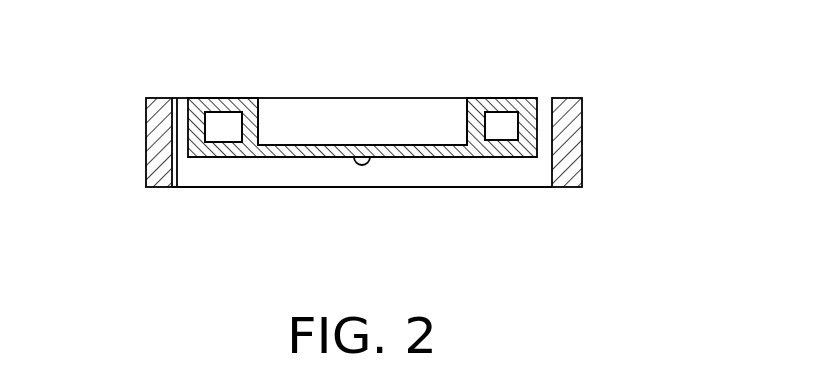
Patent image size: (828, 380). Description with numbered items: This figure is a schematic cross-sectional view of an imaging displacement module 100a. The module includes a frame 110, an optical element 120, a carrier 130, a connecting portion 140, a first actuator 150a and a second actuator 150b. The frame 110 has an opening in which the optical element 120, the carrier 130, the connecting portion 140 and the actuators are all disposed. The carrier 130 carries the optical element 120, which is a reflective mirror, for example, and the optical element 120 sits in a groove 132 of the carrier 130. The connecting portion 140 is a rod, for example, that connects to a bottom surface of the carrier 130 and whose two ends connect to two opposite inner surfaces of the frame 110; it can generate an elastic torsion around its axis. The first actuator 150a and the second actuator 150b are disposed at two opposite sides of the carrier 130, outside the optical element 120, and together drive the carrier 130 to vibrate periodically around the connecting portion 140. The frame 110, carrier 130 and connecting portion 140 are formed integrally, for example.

The imaging displacement module 100a is at (698, 252).
The frame 110 is at (576, 142).
The optical element 120 is at (425, 112).
The carrier 130 is at (230, 107).
The groove 132 is at (283, 144).
The connecting portion 140 is at (362, 165).
The first actuator 150a is at (507, 130).
The second actuator 150b is at (215, 125).